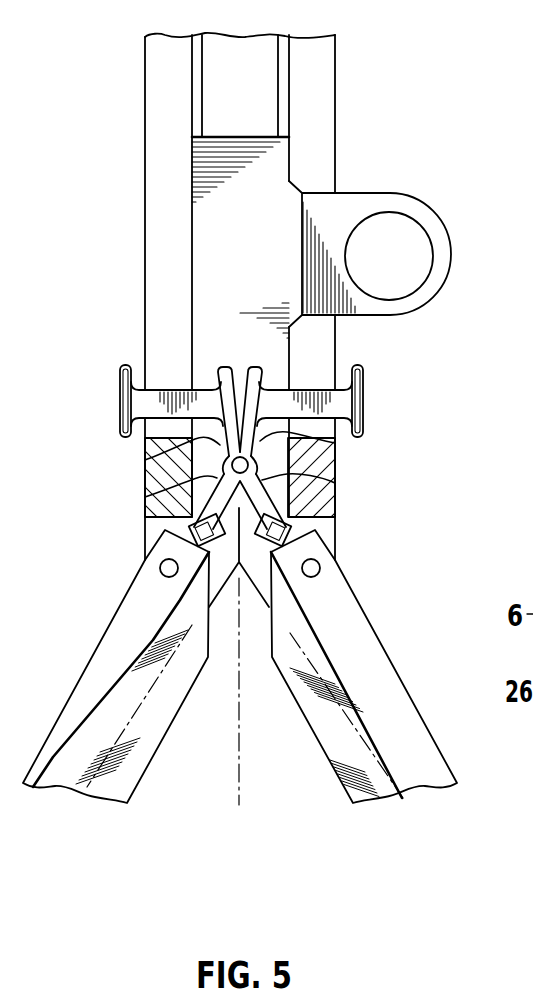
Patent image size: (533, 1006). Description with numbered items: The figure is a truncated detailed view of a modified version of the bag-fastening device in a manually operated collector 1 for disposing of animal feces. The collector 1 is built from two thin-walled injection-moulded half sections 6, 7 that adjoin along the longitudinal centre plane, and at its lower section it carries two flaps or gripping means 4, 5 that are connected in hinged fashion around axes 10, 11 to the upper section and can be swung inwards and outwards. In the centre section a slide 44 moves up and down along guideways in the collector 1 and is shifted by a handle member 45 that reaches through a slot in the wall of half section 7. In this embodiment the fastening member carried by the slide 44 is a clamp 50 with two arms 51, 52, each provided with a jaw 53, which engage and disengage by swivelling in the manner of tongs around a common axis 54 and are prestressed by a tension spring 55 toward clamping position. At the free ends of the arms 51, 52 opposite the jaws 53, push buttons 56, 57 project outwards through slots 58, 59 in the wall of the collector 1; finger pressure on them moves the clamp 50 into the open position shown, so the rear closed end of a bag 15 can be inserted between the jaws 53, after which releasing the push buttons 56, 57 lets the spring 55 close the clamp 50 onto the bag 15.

The collector 1 is at (338, 60).
The gripping means 4 is at (86, 667).
The gripping means 5 is at (392, 668).
The half section 6 is at (144, 134).
The half section 7 is at (337, 105).
The axis 10 is at (160, 570).
The axis 11 is at (320, 568).
The bag 15 is at (163, 684).
The slide 44 is at (213, 288).
The handle member 45 is at (448, 230).
The clamp 50 is at (270, 375).
The arm 51 is at (335, 443).
The arm 52 is at (145, 460).
The jaw 53 is at (192, 522).
The common axis 54 is at (145, 497).
The tension spring 55 is at (335, 483).
The push button 56 is at (120, 412).
The push button 57 is at (367, 399).
The slot 58 is at (162, 199).
The slot 59 is at (322, 158).